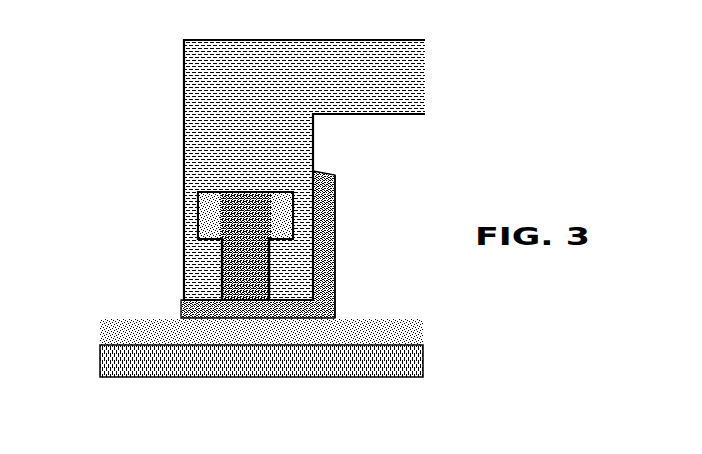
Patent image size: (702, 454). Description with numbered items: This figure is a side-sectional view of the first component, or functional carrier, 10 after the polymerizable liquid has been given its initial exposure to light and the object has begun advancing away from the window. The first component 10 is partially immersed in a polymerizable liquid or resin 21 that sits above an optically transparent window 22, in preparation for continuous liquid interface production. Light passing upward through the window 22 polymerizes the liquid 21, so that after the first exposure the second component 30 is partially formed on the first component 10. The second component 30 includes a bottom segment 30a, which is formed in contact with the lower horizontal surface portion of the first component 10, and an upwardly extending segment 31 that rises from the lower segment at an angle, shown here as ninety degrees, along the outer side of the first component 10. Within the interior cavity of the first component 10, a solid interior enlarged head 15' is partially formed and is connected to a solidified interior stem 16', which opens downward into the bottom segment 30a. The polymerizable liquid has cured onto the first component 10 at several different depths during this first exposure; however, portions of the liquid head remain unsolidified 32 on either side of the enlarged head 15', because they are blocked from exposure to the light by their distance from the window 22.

The first component 10 is at (304, 170).
The solid interior enlarged head 15' is at (245, 246).
The solidified interior stem 16' is at (245, 269).
The polymerizable liquid 21 is at (261, 332).
The optically transparent window 22 is at (261, 361).
The second component 30 is at (347, 189).
The bottom segment 30a is at (297, 308).
The upwardly extending segment 31 is at (335, 265).
The unsolidified portions of the liquid head 32 is at (227, 222).